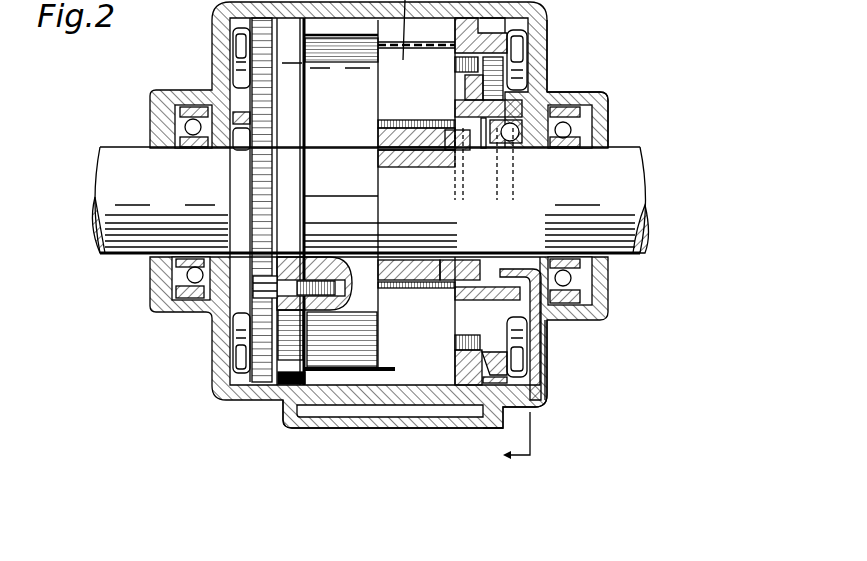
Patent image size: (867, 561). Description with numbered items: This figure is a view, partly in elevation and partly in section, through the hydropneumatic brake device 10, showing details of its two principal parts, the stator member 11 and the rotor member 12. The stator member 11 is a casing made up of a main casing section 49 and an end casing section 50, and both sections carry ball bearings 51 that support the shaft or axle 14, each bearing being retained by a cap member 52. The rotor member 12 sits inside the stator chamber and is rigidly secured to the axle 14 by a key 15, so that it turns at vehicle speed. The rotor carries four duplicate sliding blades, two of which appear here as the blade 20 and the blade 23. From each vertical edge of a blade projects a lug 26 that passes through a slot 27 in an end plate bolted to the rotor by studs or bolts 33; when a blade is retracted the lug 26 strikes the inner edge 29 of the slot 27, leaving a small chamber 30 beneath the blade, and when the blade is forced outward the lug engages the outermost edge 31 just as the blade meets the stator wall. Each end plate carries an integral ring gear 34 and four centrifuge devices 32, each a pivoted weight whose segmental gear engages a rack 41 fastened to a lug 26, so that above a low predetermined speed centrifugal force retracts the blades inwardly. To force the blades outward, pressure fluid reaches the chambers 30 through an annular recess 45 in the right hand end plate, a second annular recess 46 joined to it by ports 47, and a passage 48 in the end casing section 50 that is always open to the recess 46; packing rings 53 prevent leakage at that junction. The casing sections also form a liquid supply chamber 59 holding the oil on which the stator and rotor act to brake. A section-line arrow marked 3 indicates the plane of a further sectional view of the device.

The hydropneumatic brake device 10 is at (430, 432).
The stator member 11 is at (220, 404).
The rotor member 12 is at (322, 342).
The shaft or axle 14 is at (630, 188).
The key 15 is at (398, 149).
The blade or vane 20 is at (363, 196).
The blade or vane 23 is at (393, 345).
The lug 26 is at (458, 86).
The slot 27 is at (455, 65).
The inner edge of slot 29 is at (455, 108).
The space or chamber 30 is at (378, 124).
The outermost edge of slot 31 is at (540, 1).
The centrifuge device 32 is at (241, 33).
The studs or bolts 33 is at (303, 268).
The ring gear 34 is at (548, 31).
The rack 41 is at (500, 310).
The annular recess 45 is at (448, 135).
The second annular recess 46 is at (507, 127).
The ports 47 is at (472, 247).
The passage 48 is at (503, 382).
The main casing section 49 is at (297, 422).
The end casing section 50 is at (509, 424).
The ball bearings 51 is at (152, 114).
The cap member 52 is at (158, 280).
The packing rings 53 is at (515, 153).
The liquid supply chamber 59 is at (327, 410).
The section line 3- 3 is at (504, 440).